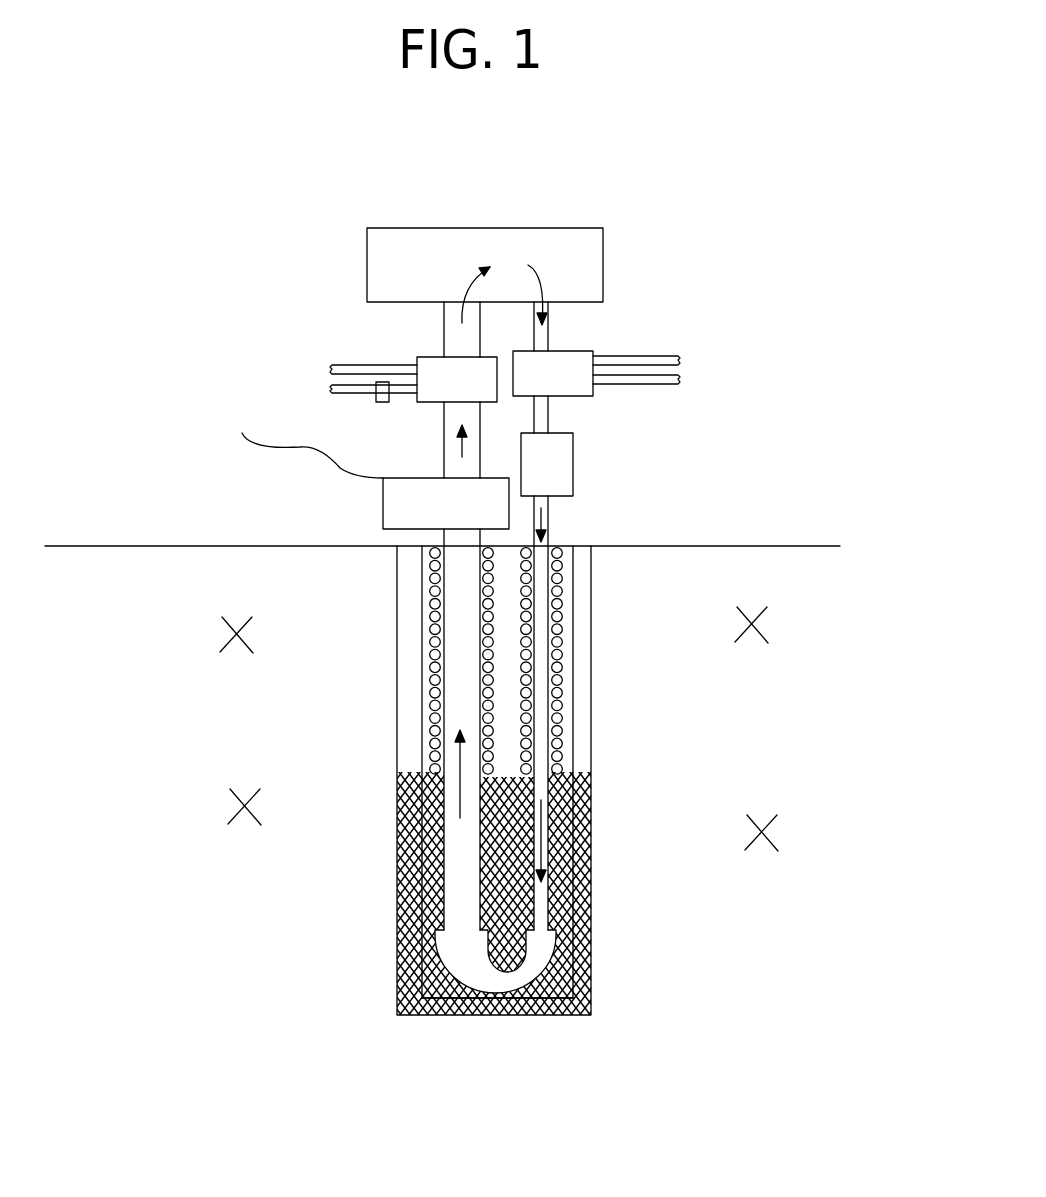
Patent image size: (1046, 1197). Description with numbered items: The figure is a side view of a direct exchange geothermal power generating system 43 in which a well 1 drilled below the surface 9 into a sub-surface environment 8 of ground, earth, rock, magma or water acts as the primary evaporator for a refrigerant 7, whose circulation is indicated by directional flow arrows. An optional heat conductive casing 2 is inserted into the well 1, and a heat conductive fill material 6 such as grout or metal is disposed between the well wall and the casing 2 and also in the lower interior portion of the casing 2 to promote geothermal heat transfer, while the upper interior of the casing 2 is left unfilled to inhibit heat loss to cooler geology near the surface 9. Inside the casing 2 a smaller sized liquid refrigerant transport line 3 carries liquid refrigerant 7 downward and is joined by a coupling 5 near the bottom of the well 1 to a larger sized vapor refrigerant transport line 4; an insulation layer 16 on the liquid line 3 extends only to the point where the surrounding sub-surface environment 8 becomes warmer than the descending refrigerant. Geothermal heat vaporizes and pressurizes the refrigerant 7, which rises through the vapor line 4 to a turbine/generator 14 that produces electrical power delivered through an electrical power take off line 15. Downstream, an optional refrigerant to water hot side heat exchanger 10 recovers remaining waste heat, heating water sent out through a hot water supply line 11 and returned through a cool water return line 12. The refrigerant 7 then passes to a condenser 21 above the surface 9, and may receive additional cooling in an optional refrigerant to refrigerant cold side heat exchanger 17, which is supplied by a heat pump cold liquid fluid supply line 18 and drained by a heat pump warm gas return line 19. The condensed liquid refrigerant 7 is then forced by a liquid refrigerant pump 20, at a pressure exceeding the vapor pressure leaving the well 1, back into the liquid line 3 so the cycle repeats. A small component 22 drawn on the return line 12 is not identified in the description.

The well 1 is at (397, 655).
The heat conductive casing 2 is at (422, 707).
The liquid refrigerant transport line 3 is at (541, 408).
The vapor refrigerant transport line 4 is at (460, 595).
The coupling 5 is at (402, 957).
The heat conductive fill material 6 is at (397, 782).
The refrigerant 7 is at (467, 285).
The sub-surface environment 8 is at (235, 630).
The surface 9 is at (205, 546).
The refrigerant to water hot side heat exchanger 10 is at (427, 357).
The hot water supply line 11 is at (345, 365).
The cool water return line 12 is at (332, 386).
The turbine/generator 14 is at (383, 509).
The electrical power take off line 15 is at (300, 447).
The insulation layer 16 is at (433, 565).
The refrigerant to refrigerant cold side heat exchanger 17 is at (572, 351).
The cold liquid fluid supply line 18 is at (668, 356).
The heat pump warm gas return line 19 is at (640, 385).
The liquid refrigerant pump 20 is at (573, 455).
The condenser 21 is at (487, 228).
The sensor 22 is at (382, 403).
The direct exchange geothermal power generating system 43 is at (676, 208).